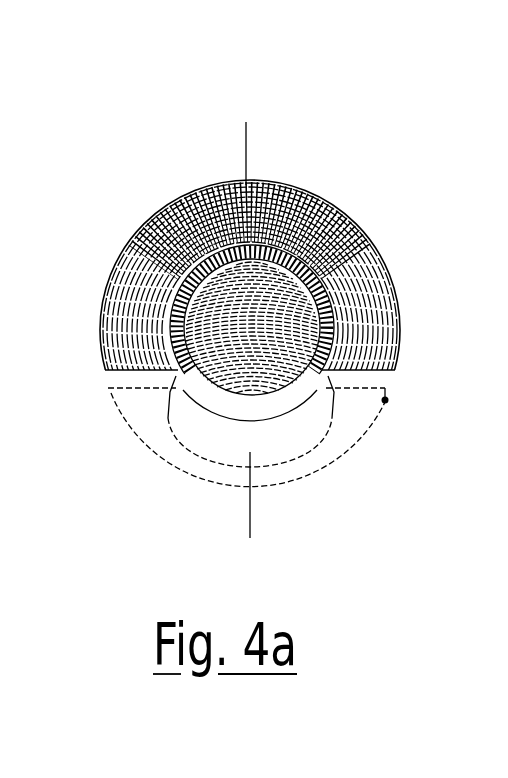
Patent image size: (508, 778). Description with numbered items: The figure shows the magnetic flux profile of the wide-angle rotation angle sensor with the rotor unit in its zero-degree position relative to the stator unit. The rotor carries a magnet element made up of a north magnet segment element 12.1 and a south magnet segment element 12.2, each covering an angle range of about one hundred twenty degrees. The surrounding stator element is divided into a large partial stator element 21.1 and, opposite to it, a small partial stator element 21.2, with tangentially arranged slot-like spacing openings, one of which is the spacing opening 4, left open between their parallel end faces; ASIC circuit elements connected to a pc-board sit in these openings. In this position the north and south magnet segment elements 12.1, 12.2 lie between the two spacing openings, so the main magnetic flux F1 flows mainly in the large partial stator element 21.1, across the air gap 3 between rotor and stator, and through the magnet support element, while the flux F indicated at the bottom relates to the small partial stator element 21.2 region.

The air gap 3 is at (290, 255).
The north magnet segment element 12.1 is at (200, 270).
The south magnet segment element 12.2 is at (310, 260).
The large partial stator element 21.1 is at (387, 292).
The small partial stator element 21.2 is at (350, 423).
The spacing opening 4 is at (501, 450).
The force F is at (252, 518).
The main magnetic flux F1 is at (250, 131).